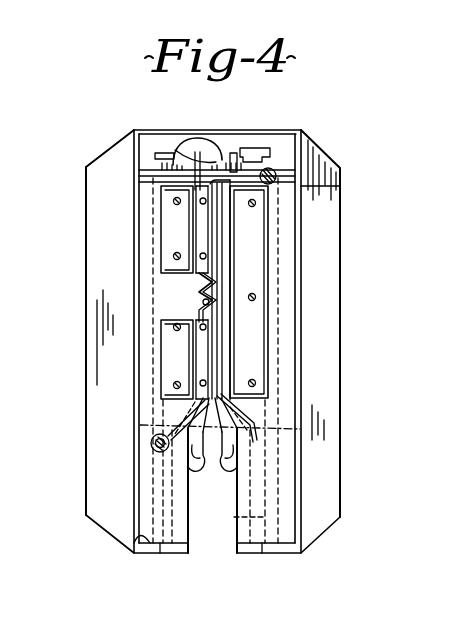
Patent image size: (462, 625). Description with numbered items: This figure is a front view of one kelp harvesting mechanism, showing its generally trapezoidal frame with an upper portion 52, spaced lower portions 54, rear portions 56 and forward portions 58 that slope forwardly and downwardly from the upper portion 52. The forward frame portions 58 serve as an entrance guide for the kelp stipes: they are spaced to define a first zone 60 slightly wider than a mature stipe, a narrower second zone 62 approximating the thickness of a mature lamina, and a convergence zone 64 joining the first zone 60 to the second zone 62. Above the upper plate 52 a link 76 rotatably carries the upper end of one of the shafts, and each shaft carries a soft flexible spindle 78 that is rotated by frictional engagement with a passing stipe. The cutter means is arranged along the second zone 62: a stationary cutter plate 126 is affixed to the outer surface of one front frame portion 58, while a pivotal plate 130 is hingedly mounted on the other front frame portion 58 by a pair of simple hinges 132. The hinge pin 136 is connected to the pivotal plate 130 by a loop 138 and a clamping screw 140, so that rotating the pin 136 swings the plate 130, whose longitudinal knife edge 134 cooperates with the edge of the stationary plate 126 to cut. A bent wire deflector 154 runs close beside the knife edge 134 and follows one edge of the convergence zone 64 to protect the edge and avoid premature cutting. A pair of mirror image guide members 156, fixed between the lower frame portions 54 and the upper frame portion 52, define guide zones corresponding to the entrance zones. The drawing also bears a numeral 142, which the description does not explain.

The upper portion 52 is at (276, 178).
The lower portions 54 is at (120, 528).
The rear portions 56 is at (88, 372).
The forward portions 58 is at (134, 476).
The first zone 60 is at (236, 497).
The second zone 62 is at (243, 150).
The convergence zone 64 is at (326, 424).
The link 76 is at (322, 153).
The spindle 78 is at (241, 440).
The stationary cutter plate 126 is at (256, 255).
The pivotal plate 130 is at (212, 318).
The hinges 132 is at (168, 232).
The knife edge 134 is at (222, 228).
The hinge pin 136 is at (205, 187).
The loop 138 is at (196, 302).
The clamping screw 140 is at (212, 292).
The gear 142 is at (150, 147).
The deflector 154 is at (152, 440).
The guide members 156 is at (234, 518).